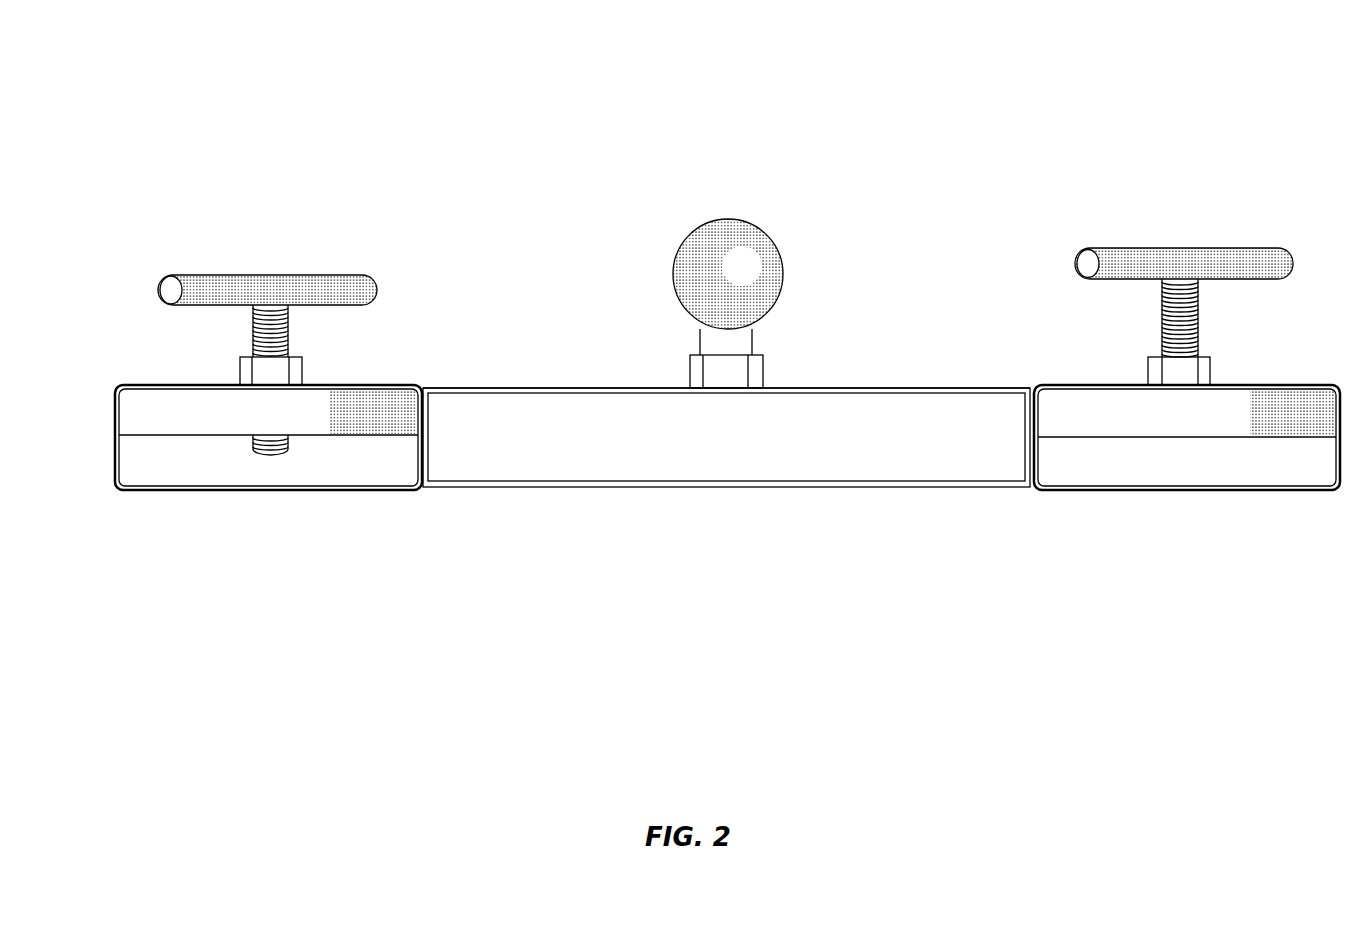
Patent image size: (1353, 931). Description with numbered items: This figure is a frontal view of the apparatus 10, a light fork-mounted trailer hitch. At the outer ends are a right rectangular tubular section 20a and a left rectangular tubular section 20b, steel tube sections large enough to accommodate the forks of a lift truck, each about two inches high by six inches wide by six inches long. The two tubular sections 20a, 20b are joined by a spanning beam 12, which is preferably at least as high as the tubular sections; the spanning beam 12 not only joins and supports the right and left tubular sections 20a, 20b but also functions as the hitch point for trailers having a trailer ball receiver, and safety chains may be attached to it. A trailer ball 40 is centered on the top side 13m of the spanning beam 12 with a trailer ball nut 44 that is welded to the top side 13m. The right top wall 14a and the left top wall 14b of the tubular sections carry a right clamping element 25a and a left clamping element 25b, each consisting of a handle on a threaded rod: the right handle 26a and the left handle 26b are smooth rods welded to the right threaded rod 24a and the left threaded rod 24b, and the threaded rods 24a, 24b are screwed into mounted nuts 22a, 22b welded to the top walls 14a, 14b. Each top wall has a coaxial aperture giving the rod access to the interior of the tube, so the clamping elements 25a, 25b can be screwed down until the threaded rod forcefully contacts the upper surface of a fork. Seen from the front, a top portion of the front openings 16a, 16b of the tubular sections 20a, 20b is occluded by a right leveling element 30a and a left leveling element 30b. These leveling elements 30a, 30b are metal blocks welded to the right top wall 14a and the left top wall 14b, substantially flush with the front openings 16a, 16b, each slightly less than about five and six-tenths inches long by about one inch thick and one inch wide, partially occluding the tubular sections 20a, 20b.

The apparatus 10 is at (527, 108).
The spanning beam 12 is at (709, 441).
The top side 13m is at (598, 387).
The right top wall 14a is at (205, 385).
The left top wall 14b is at (1133, 385).
The front opening 16a is at (128, 462).
The front opening 16b is at (1222, 475).
The right rectangular tubular section 20a is at (152, 345).
The left rectangular tubular section 20b is at (1055, 365).
The mounted nut 22a is at (275, 372).
The mounted nut 22b is at (1187, 370).
The right threaded rod 24a is at (287, 328).
The left threaded rod 24b is at (1200, 315).
The right clamping element 25a is at (180, 200).
The left clamping element 25b is at (1088, 203).
The right handle 26a is at (302, 255).
The left handle 26b is at (1242, 263).
The right leveling element 30a is at (372, 420).
The left leveling element 30b is at (1053, 427).
The trailer ball 40 is at (693, 267).
The trailer ball nut 44 is at (693, 363).